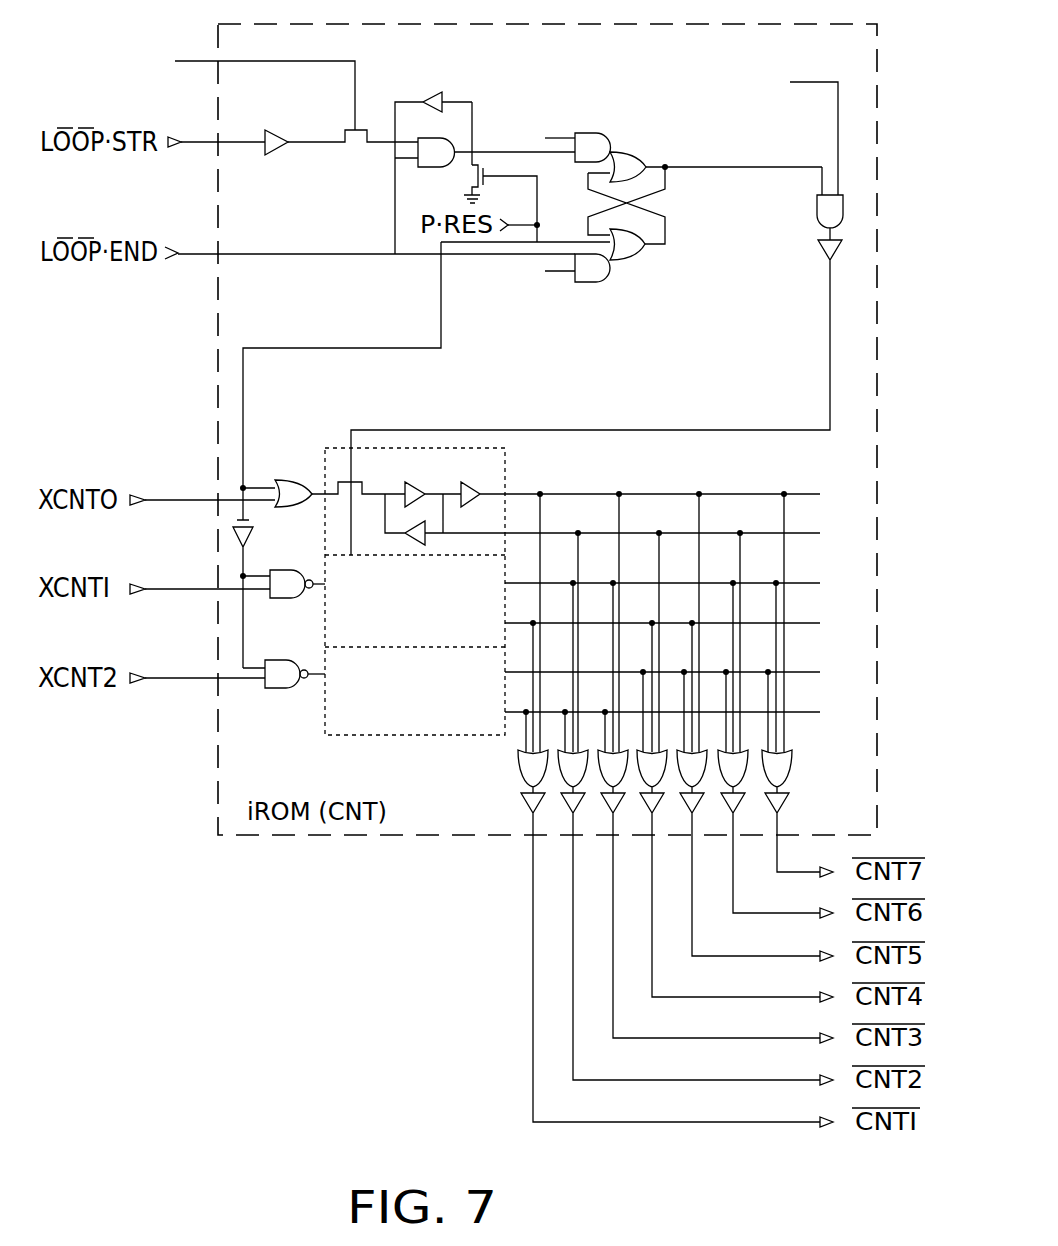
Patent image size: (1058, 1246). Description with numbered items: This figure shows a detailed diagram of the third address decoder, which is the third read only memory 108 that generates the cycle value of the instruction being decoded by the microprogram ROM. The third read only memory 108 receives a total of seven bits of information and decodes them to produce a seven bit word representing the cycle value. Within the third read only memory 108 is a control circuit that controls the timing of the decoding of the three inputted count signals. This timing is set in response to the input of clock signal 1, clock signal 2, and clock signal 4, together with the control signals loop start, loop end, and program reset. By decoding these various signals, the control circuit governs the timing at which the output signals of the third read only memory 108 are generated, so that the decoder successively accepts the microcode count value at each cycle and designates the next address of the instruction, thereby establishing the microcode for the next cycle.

The third read only memory 108 is at (877, 437).
The clock signal 1 is at (165, 55).
The clock signal 2 is at (780, 76).
The clock signal 4 is at (535, 132).